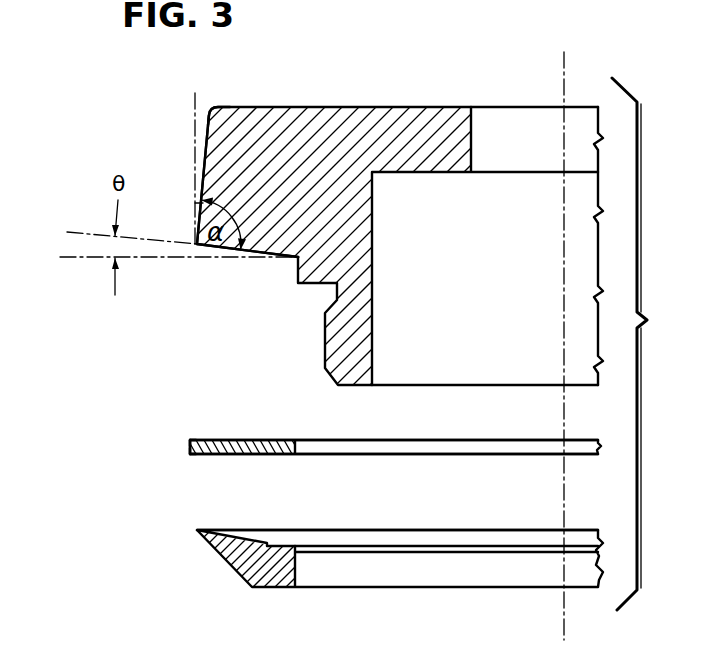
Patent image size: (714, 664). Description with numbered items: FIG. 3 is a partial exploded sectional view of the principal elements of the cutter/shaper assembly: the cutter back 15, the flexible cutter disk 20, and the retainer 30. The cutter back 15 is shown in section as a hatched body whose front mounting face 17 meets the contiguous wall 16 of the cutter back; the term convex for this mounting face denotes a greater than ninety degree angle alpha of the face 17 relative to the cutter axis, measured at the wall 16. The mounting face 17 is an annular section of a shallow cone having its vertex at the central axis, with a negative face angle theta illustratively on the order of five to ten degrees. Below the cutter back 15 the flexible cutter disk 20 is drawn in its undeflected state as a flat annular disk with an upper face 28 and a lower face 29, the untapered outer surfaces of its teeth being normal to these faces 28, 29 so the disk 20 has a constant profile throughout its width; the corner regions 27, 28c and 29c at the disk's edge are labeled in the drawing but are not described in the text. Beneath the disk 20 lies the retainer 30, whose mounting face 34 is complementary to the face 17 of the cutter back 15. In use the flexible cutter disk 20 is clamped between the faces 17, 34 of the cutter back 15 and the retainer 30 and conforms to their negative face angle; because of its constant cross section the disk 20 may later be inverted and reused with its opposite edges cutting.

The cutter back 15 is at (215, 119).
The wall of the cutter back 16 is at (207, 167).
The mounting face of cutter back 17 is at (257, 262).
The flexible cutter disk 20 is at (190, 442).
The cutting edge end face of insert 27 is at (190, 450).
The upper face of disk 28 is at (276, 418).
The top corner edge of insert 28c is at (192, 439).
The lower face of disk 29 is at (268, 456).
The bottom corner edge of insert 29c is at (192, 456).
The retainer 30 is at (221, 553).
The mounting face of retainer 34 is at (248, 537).